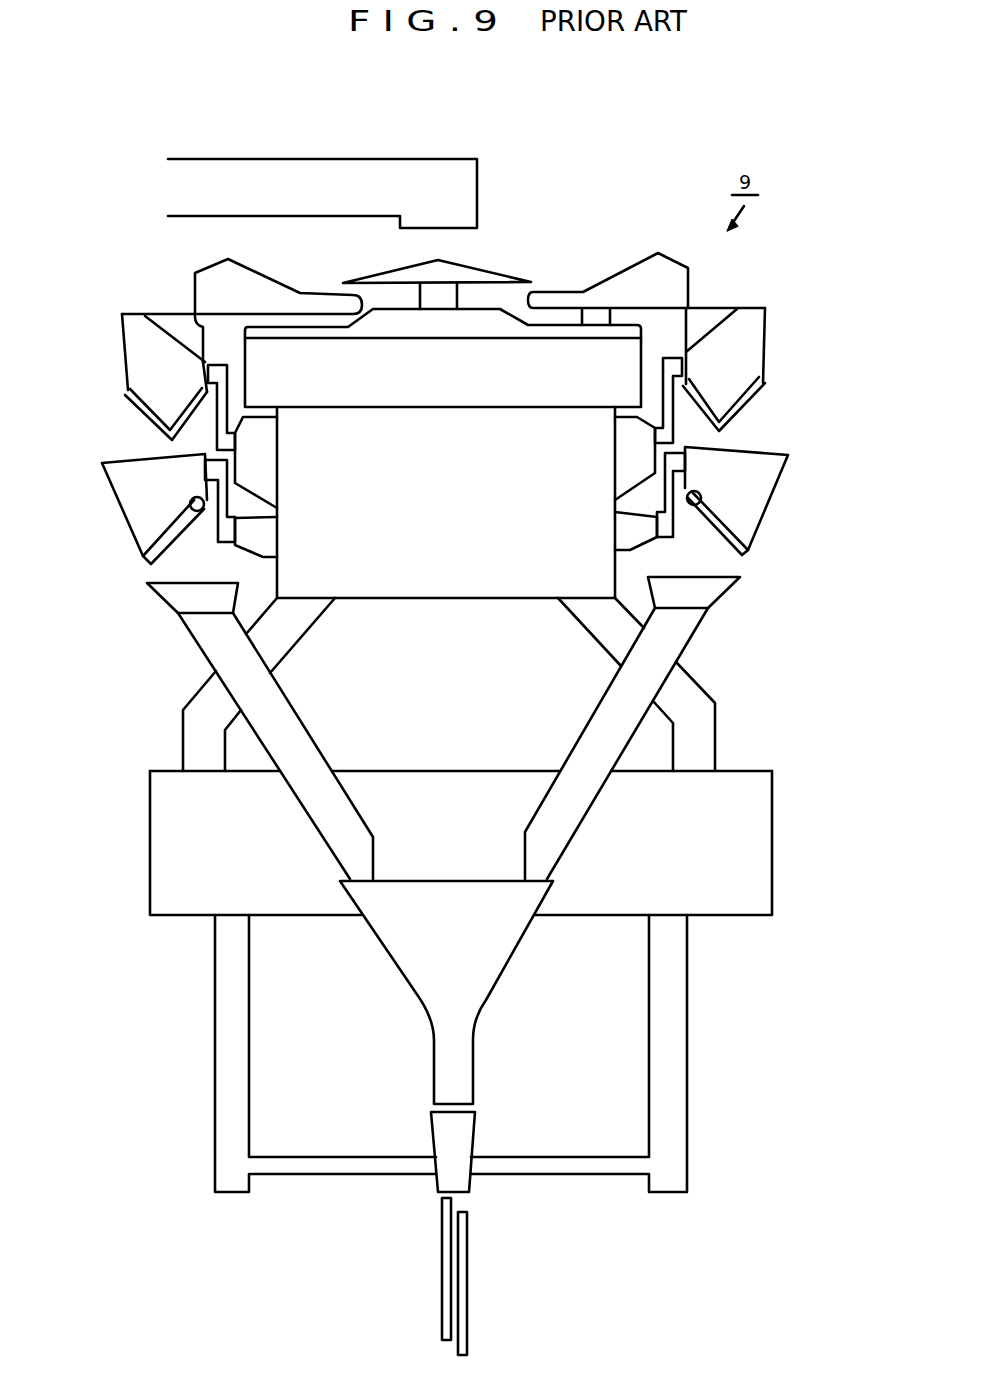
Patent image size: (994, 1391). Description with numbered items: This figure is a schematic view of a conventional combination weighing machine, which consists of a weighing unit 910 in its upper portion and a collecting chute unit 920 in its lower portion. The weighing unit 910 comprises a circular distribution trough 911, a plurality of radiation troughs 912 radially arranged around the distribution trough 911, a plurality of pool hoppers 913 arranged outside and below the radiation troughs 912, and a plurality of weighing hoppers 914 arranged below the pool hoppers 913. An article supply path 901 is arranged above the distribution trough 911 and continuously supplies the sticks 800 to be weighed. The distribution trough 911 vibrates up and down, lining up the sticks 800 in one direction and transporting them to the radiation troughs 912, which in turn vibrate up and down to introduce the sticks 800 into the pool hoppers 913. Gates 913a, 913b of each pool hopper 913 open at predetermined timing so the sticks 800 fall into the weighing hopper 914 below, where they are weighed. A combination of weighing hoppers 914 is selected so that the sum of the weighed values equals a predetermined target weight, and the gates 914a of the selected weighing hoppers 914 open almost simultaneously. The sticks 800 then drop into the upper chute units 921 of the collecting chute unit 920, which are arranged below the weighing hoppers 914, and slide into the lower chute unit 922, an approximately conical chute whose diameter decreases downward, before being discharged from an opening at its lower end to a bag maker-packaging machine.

The sticks 800 is at (464, 1260).
The article supply path 901 is at (462, 193).
The weighing unit 910 is at (81, 313).
The circular distribution trough 911 is at (474, 269).
The radiation trough 912 is at (628, 282).
The pool hopper 913 is at (758, 323).
The gate 913a is at (710, 397).
The gate 913b is at (753, 407).
The weighing hopper 914 is at (762, 485).
The gate 914a is at (763, 530).
The collecting chute unit 920 is at (81, 621).
The upper chute unit 921 is at (685, 635).
The lower chute unit 922 is at (478, 945).